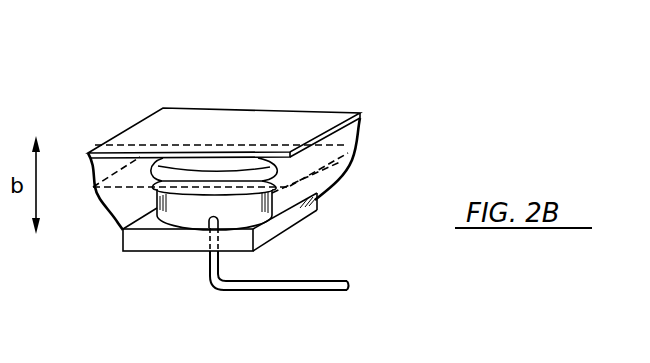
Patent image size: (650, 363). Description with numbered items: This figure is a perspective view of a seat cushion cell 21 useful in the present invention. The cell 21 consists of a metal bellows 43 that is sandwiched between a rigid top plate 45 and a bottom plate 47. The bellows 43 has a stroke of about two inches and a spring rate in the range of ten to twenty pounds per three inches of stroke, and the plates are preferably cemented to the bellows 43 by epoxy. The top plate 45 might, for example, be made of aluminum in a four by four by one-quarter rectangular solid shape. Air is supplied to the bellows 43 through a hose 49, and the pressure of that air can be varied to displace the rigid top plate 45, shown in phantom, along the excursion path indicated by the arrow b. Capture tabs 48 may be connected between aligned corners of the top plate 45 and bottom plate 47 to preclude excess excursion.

The seat cushion cell 21 is at (122, 102).
The top plate 45 is at (328, 110).
The capture tabs 48 is at (372, 128).
The metal bellows 43 is at (318, 210).
The bottom plate 47 is at (156, 244).
The hose 49 is at (297, 280).